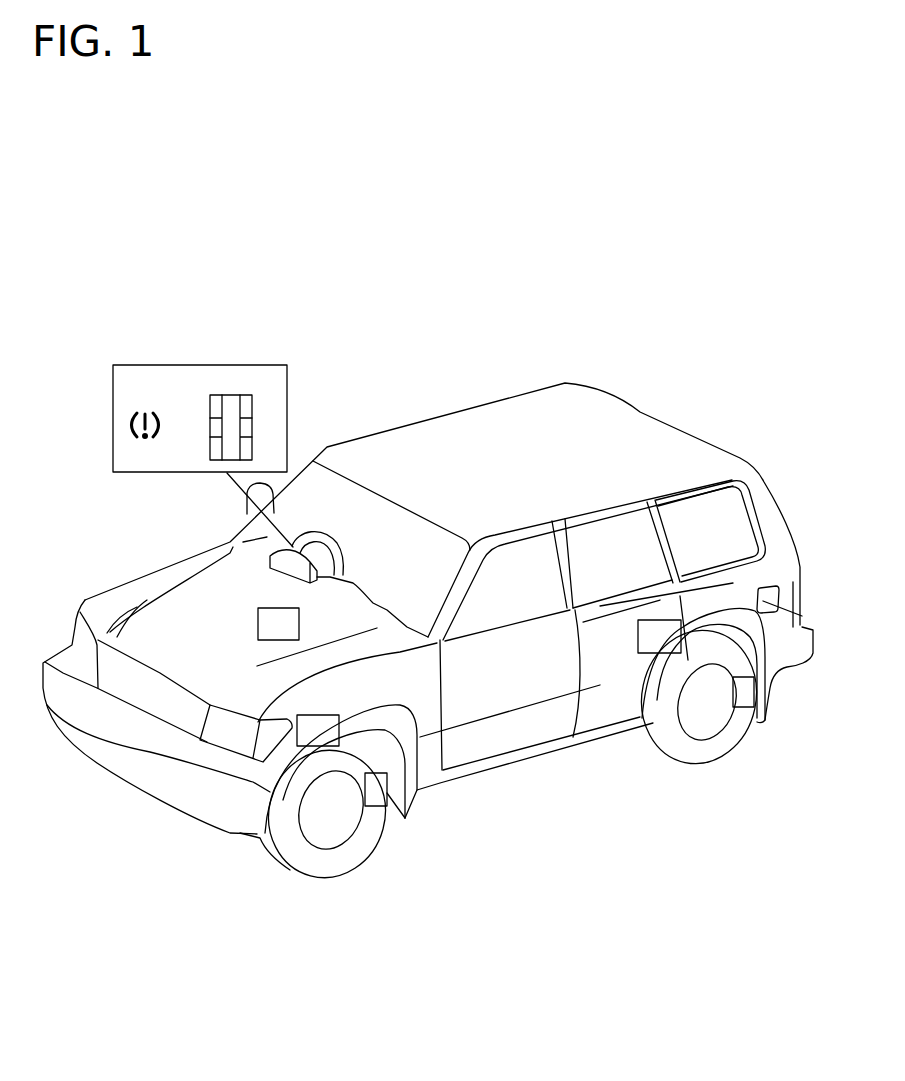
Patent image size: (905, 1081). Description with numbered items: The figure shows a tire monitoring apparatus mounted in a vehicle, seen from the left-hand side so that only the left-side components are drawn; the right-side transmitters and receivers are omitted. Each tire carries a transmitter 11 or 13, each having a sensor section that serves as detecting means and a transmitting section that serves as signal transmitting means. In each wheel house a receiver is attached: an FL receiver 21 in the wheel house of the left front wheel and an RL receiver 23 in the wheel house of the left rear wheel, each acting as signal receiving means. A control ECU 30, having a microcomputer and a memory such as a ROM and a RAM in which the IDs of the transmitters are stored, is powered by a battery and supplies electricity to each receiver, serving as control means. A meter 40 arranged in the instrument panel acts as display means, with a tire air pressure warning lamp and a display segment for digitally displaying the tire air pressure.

The transmitter 11 is at (417, 793).
The transmitter 13 is at (757, 692).
The FL receiver 21 is at (272, 840).
The RL receiver 23 is at (760, 618).
The control ECU 30 is at (258, 624).
The meter 40 is at (305, 550).